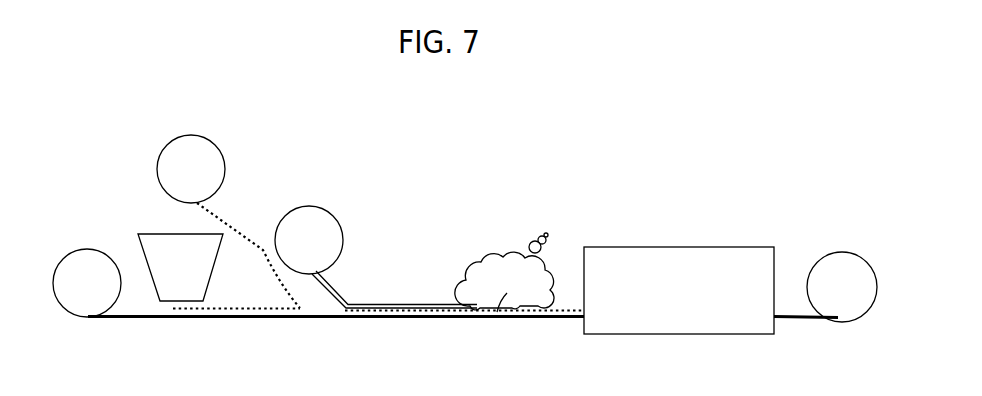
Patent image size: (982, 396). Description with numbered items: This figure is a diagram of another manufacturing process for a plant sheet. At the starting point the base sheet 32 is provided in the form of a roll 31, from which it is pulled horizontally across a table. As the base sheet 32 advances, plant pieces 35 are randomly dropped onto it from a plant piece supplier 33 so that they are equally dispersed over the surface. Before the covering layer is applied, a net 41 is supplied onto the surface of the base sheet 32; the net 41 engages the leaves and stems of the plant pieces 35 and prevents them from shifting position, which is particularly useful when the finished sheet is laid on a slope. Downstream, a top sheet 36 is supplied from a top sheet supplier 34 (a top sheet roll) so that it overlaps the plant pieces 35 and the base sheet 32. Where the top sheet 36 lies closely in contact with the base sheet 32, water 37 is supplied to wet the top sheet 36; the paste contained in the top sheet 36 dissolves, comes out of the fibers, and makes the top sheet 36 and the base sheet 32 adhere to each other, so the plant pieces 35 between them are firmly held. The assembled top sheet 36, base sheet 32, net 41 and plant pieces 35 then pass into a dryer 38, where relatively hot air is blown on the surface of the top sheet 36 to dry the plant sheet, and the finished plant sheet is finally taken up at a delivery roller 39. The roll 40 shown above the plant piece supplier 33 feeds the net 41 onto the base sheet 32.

The roll 31 is at (75, 301).
The base sheet 32 is at (130, 318).
The plant piece supplier 33 is at (155, 247).
The top sheet supplier 34 is at (327, 227).
The plant pieces 35 is at (225, 298).
The top sheet 36 is at (400, 304).
The water 37 is at (497, 316).
The dryer 38 is at (673, 258).
The delivery roller 39 is at (855, 267).
The cover sheet roll 40 is at (205, 157).
The net 41 is at (236, 217).